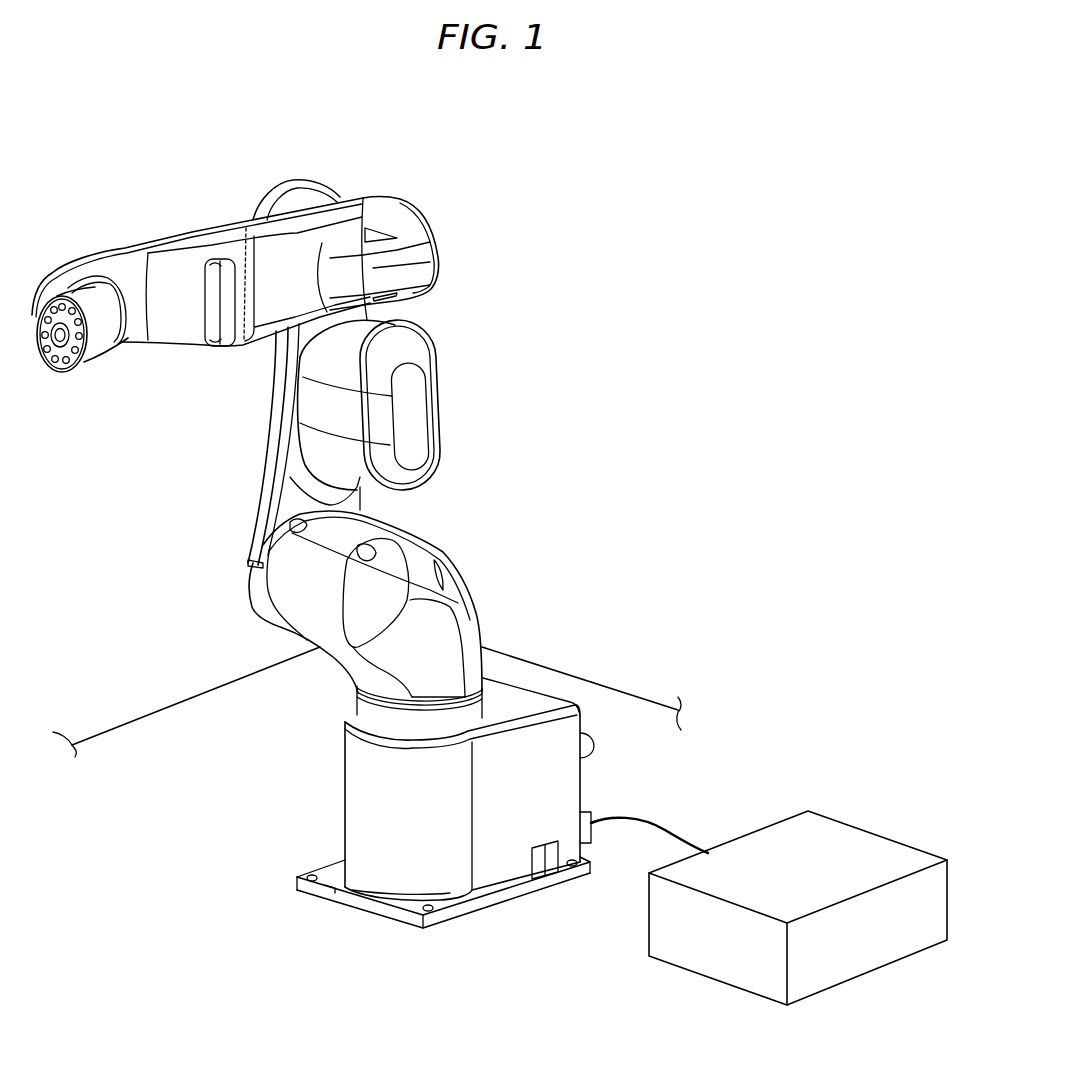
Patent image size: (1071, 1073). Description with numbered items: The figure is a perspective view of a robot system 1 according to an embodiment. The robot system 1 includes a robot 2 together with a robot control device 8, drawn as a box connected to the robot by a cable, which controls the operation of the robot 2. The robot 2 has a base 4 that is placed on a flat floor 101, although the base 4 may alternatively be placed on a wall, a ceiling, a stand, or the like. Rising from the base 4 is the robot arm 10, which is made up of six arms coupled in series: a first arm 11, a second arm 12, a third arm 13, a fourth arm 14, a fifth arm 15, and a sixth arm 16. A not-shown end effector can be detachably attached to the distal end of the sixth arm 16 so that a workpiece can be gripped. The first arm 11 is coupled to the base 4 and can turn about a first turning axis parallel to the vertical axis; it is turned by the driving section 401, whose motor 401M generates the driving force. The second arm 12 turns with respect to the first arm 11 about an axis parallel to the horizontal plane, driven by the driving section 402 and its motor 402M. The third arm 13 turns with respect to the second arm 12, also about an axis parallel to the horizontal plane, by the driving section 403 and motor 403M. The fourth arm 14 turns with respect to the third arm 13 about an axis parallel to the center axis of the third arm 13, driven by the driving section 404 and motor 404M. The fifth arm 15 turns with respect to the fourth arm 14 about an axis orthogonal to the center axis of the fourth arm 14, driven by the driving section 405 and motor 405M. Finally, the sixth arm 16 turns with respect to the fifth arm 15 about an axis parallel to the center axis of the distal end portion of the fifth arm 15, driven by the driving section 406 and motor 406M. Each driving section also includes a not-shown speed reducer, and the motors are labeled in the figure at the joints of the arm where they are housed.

The robot system 1 is at (490, 153).
The robot 2 is at (475, 207).
The base 4 is at (585, 782).
The robot control device 8 is at (790, 840).
The robot arm 10 is at (477, 247).
The first arm 11 is at (462, 580).
The second arm 12 is at (259, 479).
The third arm 13 is at (416, 201).
The fourth arm 14 is at (203, 224).
The fifth arm 15 is at (103, 359).
The sixth arm 16 is at (62, 378).
The floor 101 is at (173, 725).
The driving section 401 is at (514, 643).
The motor 401M is at (418, 625).
The driving section 402 is at (494, 416).
The motor 402M is at (416, 428).
The driving section 403 is at (443, 414).
The motor 403M is at (418, 377).
The driving section 404 is at (480, 282).
The motor 404M is at (408, 264).
The driving section 405 is at (210, 343).
The motor 405M is at (240, 347).
The driving section 406 is at (276, 184).
The motor 406M is at (247, 228).